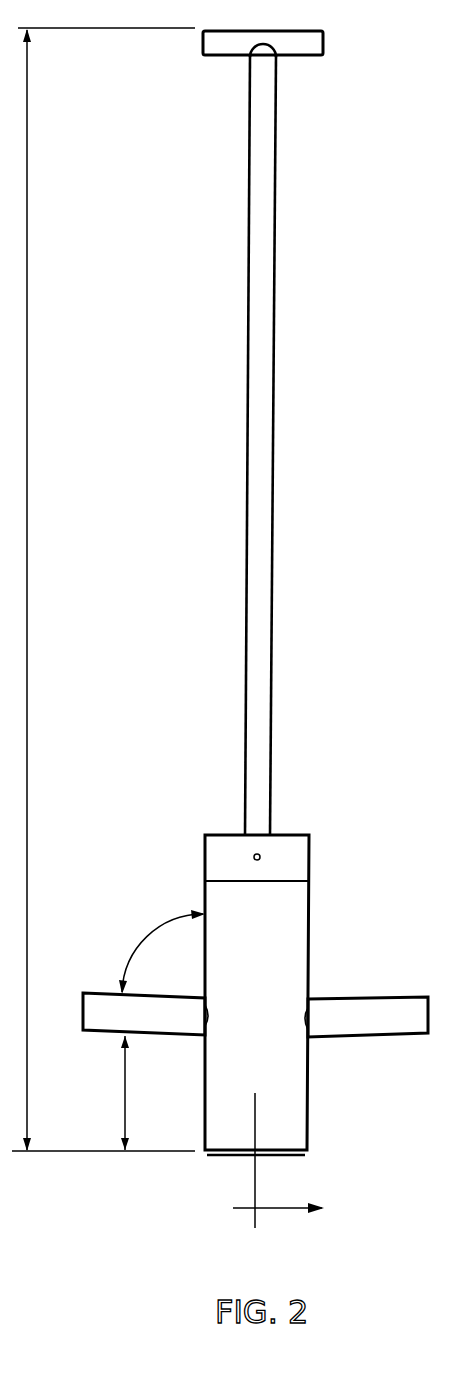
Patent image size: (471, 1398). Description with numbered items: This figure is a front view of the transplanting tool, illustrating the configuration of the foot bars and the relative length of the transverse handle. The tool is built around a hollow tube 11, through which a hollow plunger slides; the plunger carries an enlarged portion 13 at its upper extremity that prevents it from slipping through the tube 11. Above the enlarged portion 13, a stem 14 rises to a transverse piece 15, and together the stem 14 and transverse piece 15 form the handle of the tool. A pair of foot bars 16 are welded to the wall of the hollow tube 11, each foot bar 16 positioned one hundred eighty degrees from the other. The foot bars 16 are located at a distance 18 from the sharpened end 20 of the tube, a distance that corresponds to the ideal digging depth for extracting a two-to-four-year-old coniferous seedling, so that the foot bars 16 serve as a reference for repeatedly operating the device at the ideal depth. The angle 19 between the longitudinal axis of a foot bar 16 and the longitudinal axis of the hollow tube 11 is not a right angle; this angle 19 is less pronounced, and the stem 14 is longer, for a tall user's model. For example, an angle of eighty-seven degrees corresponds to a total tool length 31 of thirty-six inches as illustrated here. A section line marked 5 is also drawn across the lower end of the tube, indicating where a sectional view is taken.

The section line 5- 5 is at (285, 1174).
The hollow tube 11 is at (312, 916).
The enlarged portion 13 is at (312, 857).
The stem 14 is at (277, 236).
The transverse piece 15 is at (303, 51).
The foot bars 16 is at (96, 991).
The distance 18 is at (124, 1090).
The angle 19 is at (152, 928).
The sharpened end 20 is at (309, 1157).
The total tool length 31 is at (28, 648).